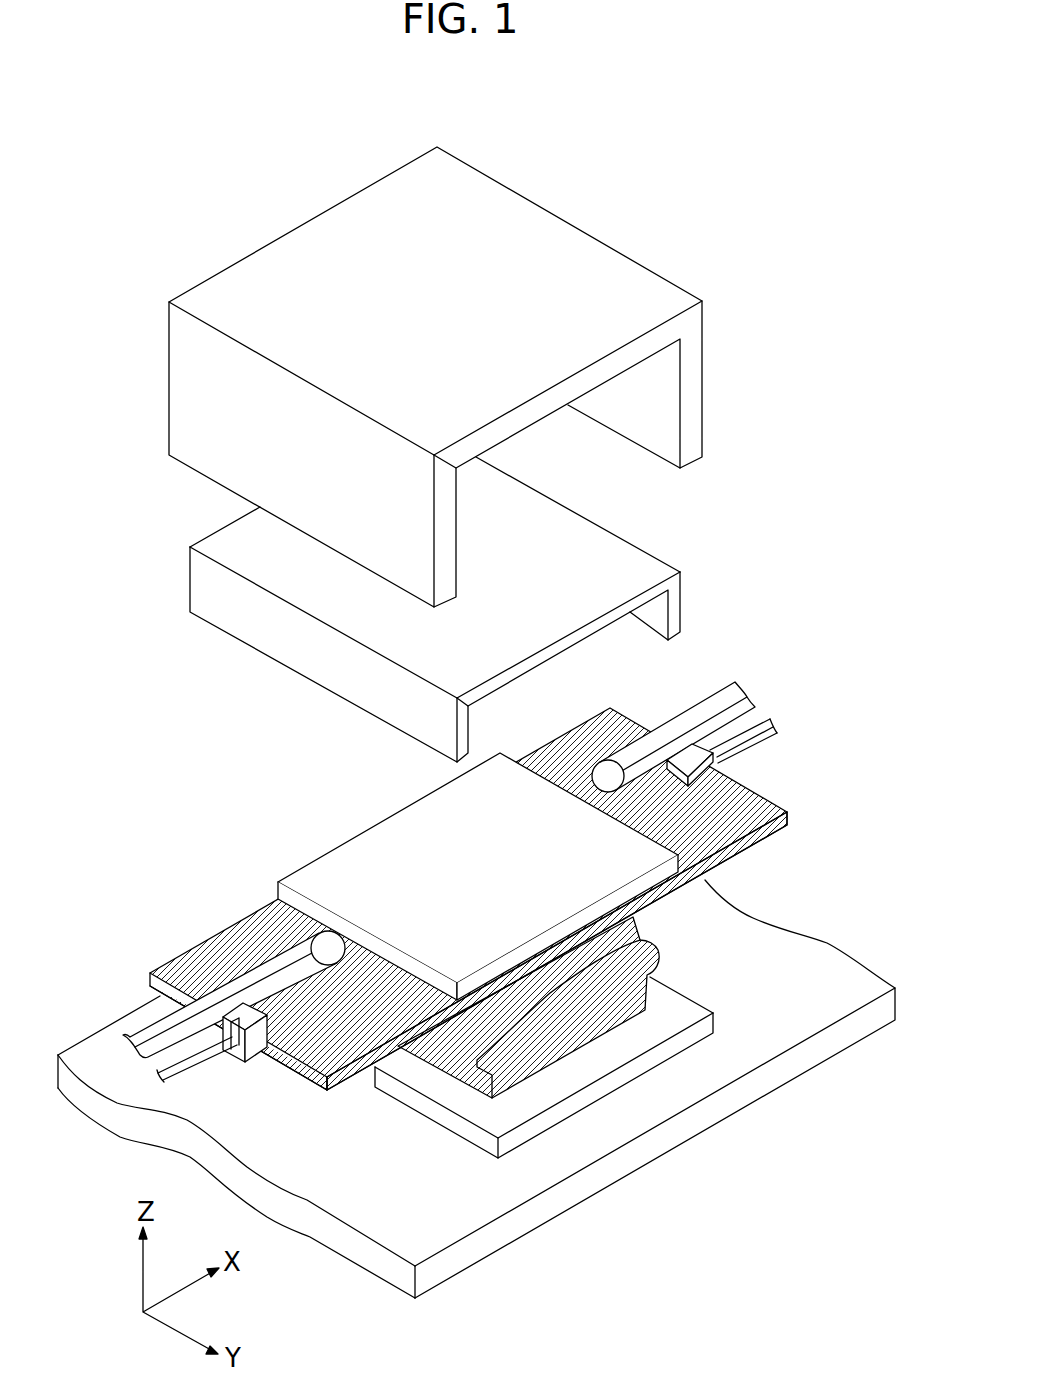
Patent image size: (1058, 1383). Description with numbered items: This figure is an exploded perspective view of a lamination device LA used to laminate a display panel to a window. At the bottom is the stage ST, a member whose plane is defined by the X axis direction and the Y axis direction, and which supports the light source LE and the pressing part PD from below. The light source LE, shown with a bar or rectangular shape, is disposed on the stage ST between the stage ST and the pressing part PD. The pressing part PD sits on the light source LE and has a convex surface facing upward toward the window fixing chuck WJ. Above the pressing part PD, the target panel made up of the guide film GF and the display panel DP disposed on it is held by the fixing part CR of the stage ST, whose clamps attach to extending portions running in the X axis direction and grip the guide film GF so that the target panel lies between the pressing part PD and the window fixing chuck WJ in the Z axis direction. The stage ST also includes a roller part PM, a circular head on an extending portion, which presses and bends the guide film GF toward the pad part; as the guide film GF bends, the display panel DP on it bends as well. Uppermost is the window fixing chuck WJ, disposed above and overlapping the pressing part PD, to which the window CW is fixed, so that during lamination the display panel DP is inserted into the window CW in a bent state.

The lamination device LA is at (476, 722).
The window fixing chuck WJ is at (623, 275).
The window CW is at (622, 550).
The roller part PM is at (720, 690).
The fixing part CR is at (755, 720).
The display panel DP is at (337, 860).
The guide film GF is at (257, 930).
The stage ST is at (840, 963).
The pressing part PD is at (597, 1022).
The light source LE is at (573, 1105).